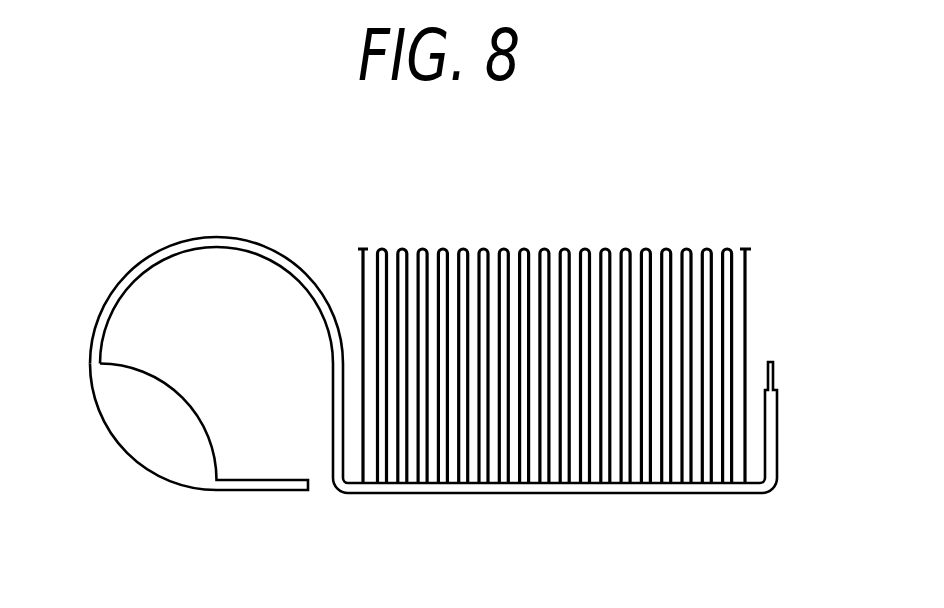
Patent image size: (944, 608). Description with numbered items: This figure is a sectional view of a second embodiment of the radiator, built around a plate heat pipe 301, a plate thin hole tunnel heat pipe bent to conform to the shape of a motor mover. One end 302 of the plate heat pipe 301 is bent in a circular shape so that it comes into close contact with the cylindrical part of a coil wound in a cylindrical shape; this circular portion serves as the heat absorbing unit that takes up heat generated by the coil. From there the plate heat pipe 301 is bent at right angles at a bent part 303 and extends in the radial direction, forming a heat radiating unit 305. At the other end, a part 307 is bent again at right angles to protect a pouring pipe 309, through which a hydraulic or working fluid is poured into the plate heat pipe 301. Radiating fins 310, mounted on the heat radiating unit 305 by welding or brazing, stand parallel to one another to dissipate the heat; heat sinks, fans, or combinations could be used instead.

The plate heat pipe 301 is at (120, 442).
The one end of the plate heat pipe 302 is at (130, 278).
The bent part 303 is at (352, 485).
The heat radiating unit 305 is at (613, 485).
The further bent part 307 is at (766, 480).
The pouring pipe 309 is at (772, 367).
The radiating fins 310 is at (463, 248).